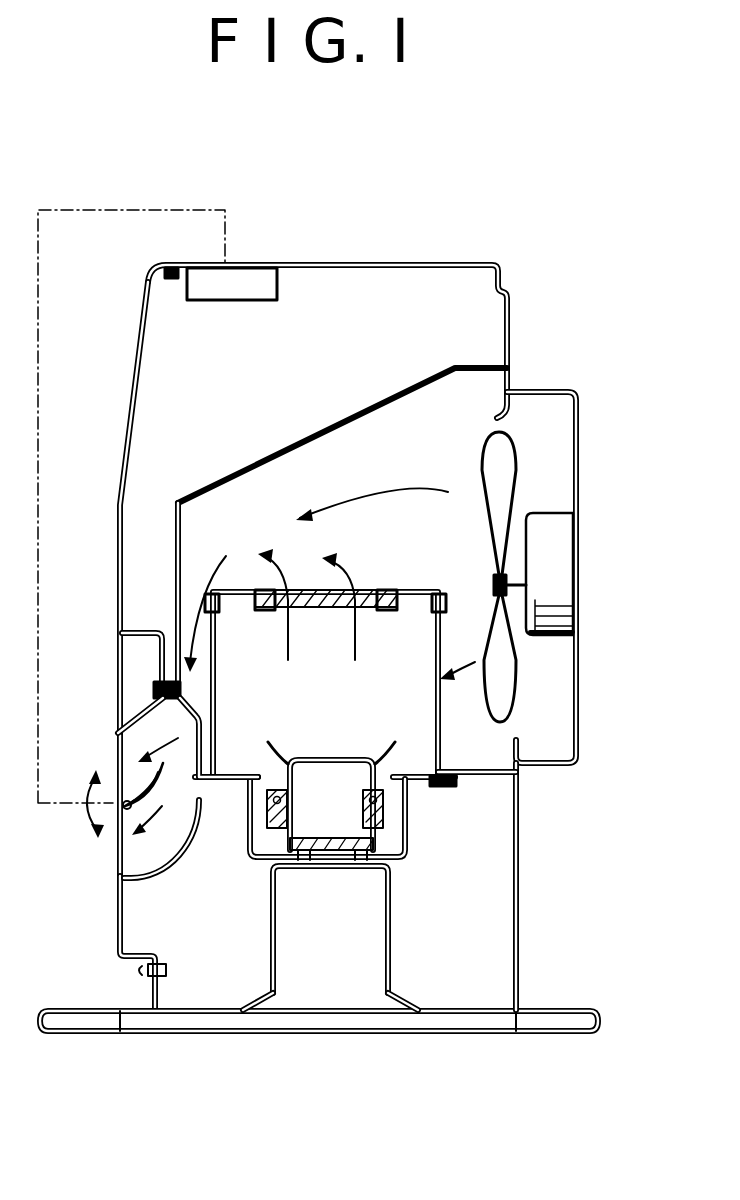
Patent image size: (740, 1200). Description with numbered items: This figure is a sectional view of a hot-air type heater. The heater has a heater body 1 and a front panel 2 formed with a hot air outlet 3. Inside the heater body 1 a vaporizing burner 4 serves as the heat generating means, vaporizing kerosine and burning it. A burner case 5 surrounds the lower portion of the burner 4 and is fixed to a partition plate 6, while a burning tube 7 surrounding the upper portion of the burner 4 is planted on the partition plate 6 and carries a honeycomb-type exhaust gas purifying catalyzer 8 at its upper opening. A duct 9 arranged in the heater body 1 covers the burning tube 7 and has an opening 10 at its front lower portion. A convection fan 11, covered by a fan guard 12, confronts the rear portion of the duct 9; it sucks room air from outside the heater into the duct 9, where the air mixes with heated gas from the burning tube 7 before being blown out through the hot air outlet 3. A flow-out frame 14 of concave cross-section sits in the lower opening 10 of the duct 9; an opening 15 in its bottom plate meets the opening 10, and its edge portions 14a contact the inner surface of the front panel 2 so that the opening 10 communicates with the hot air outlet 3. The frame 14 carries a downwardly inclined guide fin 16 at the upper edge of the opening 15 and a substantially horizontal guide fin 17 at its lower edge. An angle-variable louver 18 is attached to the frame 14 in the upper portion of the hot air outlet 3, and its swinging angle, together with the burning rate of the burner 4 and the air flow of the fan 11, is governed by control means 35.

The heater body 1 is at (506, 314).
The front panel 2 is at (118, 600).
The hot air outlet 3 is at (120, 880).
The vaporizing burner 4 is at (410, 830).
The burner case 5 is at (396, 824).
The partition plate 6 is at (516, 790).
The burning tube 7 is at (443, 736).
The exhaust gas purifying catalyzer 8 is at (392, 592).
The duct 9 is at (505, 368).
The opening 10 is at (150, 707).
The convection fan 11 is at (505, 447).
The fan guard 12 is at (575, 464).
The flow-out frame 14 is at (164, 666).
The edge portions 14a is at (127, 890).
The opening 15 is at (180, 742).
The guide fin 16 is at (160, 738).
The guide fin 17 is at (188, 838).
The angle-variable louver 18 is at (100, 816).
The control means 35 is at (243, 280).